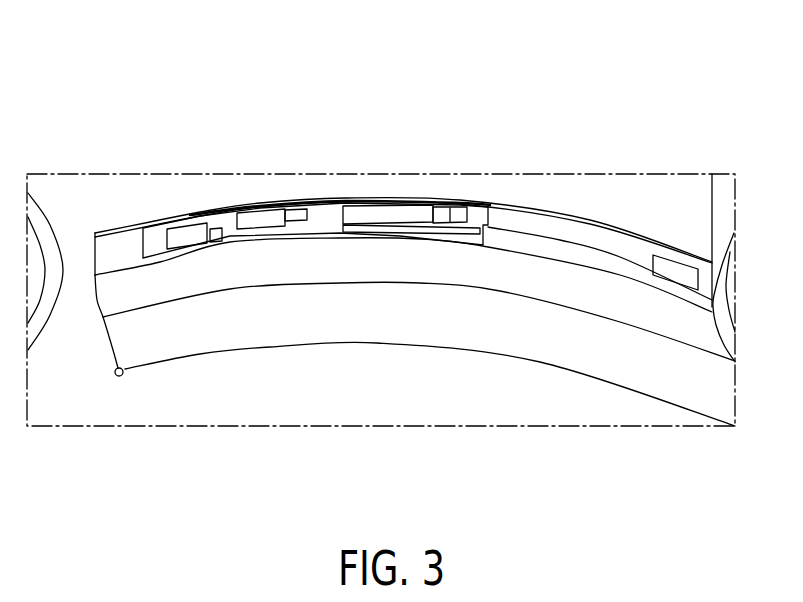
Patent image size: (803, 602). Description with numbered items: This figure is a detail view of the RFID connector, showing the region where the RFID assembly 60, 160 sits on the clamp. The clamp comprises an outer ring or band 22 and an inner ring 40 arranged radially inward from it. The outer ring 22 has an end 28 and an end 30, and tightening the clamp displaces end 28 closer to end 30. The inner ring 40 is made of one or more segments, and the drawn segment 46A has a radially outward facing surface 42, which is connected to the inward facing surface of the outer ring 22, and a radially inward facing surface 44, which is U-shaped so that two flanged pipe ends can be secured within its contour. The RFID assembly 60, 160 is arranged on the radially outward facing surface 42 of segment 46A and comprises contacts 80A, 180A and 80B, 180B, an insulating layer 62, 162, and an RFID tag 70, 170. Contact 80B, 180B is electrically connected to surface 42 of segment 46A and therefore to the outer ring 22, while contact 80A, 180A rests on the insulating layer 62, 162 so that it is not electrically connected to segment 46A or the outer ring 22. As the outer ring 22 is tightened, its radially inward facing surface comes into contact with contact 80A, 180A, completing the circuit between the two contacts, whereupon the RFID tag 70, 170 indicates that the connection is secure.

The outer ring 22 is at (57, 197).
The end 28 is at (46, 166).
The end 30 is at (724, 166).
The inner ring 40 is at (577, 343).
The radially outward facing surface 42 is at (287, 264).
The radially inward facing surface 44 is at (377, 343).
The segment 46A is at (452, 325).
The RFID assembly 60 is at (340, 118).
The RFID assembly 160 is at (392, 145).
The insulating layer 62 is at (315, 182).
The insulating layer 162 is at (237, 205).
The RFID tag 70 is at (436, 170).
The RFID tag 170 is at (352, 188).
The contact 80A is at (210, 178).
The contact 180A is at (196, 193).
The contact 80B is at (649, 206).
The contact 180B is at (671, 243).